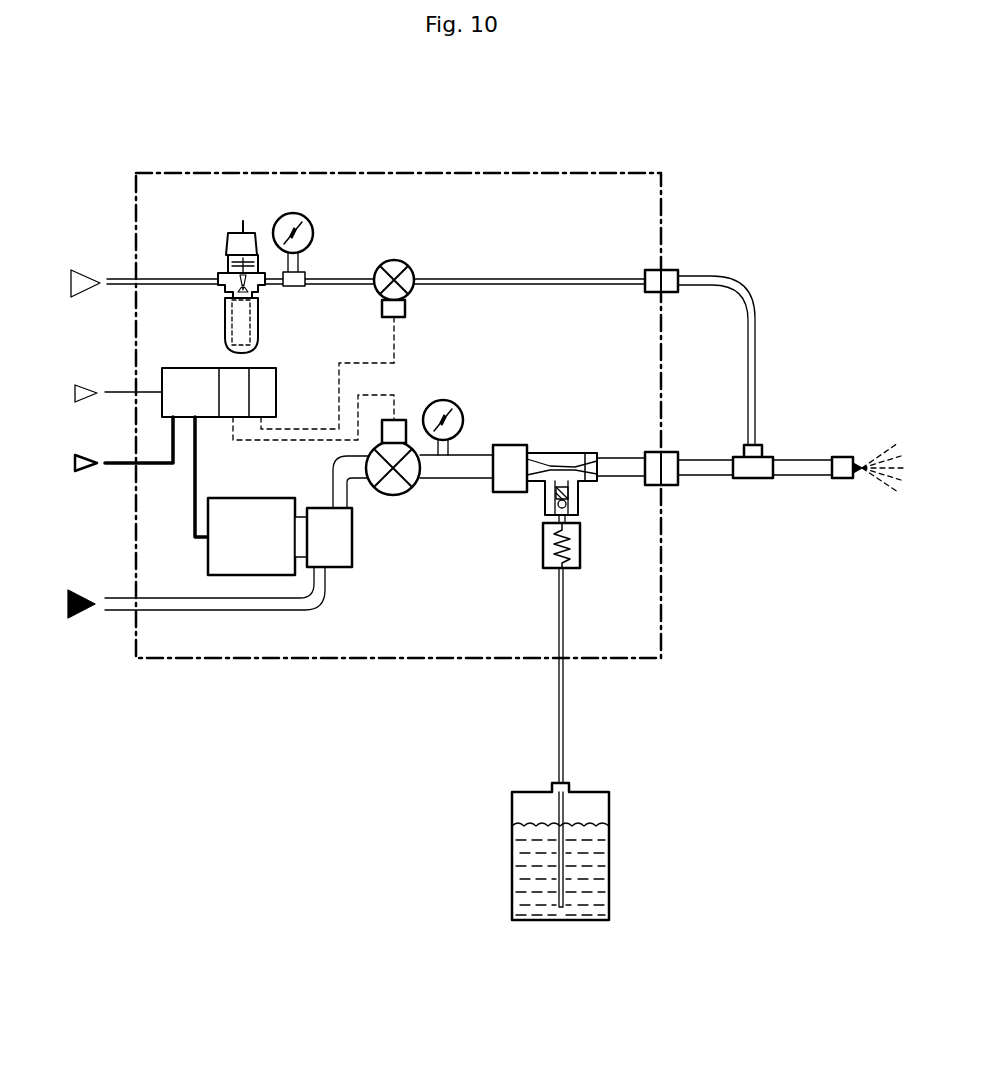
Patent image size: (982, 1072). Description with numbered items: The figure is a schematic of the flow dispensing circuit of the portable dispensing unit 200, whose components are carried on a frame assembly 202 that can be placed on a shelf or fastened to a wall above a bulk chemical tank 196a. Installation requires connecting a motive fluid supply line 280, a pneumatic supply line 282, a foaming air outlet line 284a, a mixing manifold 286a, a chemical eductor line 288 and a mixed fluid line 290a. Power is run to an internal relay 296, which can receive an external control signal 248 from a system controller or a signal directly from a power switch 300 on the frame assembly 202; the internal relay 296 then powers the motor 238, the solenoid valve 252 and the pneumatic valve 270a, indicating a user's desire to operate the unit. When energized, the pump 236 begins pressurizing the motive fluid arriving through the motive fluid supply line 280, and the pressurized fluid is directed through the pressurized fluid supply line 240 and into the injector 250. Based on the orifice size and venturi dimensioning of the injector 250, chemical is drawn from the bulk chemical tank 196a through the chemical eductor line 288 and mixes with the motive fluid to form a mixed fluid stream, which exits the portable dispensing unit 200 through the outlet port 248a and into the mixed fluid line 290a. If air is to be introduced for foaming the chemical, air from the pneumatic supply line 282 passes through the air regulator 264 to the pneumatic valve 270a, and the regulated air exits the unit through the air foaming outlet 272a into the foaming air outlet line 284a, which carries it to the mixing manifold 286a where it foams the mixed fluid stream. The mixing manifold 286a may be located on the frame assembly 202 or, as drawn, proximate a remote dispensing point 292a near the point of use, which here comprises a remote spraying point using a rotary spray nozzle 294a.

The portable dispensing unit 200 is at (693, 101).
The frame assembly 202 is at (540, 172).
The pneumatic supply line 282 is at (120, 279).
The air regulator 264 is at (243, 232).
The pneumatic valve 270a is at (398, 260).
The air foaming outlet 272a is at (655, 270).
The foaming air outlet line 284a is at (756, 322).
The mixing manifold 286a is at (772, 455).
The mixed fluid line 290a is at (691, 486).
The outlet port 248a is at (655, 486).
The remote dispensing point 292a is at (851, 456).
The rotary spray nozzle 294a is at (853, 481).
The internal relay 296 is at (180, 368).
The control signal input 248 is at (72, 393).
The power switch 300 is at (74, 466).
The motor 238 is at (206, 560).
The pump 236 is at (343, 570).
The motive fluid supply line 280 is at (185, 612).
The solenoid valve 252 is at (383, 496).
The pressurized fluid supply line 240 is at (460, 483).
The injector 250 is at (580, 497).
The chemical eductor line 288 is at (564, 772).
The bulk chemical tank 196a is at (610, 881).